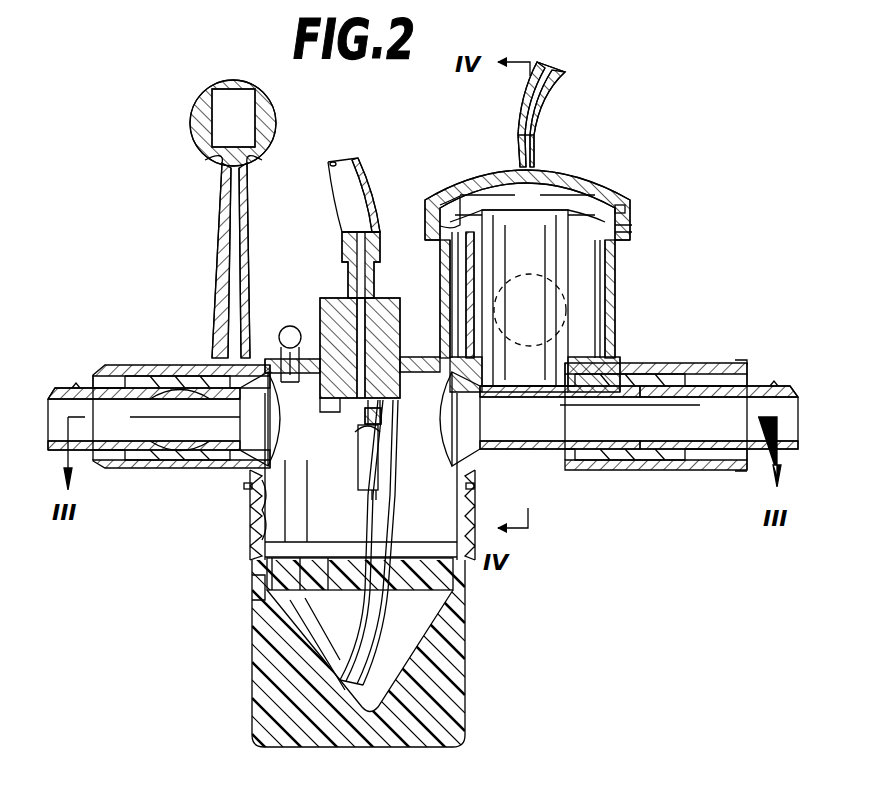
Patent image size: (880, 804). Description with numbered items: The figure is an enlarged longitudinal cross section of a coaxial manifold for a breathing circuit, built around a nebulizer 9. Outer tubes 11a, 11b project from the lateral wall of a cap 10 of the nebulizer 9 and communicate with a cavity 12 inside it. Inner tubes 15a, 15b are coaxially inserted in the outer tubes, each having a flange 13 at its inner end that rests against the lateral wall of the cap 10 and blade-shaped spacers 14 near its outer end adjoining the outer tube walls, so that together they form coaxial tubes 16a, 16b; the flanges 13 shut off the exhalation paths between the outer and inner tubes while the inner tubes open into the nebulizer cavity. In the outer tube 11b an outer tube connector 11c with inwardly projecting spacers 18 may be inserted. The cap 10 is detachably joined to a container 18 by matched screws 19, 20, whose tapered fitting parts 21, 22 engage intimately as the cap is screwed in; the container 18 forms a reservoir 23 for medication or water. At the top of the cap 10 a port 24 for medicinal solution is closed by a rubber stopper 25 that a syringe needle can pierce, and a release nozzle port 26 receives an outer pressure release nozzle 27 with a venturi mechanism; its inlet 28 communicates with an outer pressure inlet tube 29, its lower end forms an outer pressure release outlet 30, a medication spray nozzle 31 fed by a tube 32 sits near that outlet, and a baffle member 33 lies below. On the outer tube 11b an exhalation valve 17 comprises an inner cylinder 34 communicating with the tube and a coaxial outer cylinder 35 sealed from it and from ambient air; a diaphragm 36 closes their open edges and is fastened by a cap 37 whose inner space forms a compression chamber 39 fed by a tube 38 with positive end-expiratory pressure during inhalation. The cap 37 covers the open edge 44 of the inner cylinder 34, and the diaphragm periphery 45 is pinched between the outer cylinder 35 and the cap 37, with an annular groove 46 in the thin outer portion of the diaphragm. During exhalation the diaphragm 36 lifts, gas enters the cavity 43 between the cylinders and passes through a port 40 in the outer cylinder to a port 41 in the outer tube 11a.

The nebulizer 9 is at (474, 571).
The cap 10 is at (420, 357).
The outer tube 11a is at (120, 462).
The outer tube 11b is at (548, 462).
The outer tube connector 11c is at (700, 466).
The cavity 12 is at (260, 580).
The flange 13 is at (240, 462).
The spacer 14 is at (133, 372).
The inner tube 15a is at (180, 384).
The inner tube 15b is at (605, 462).
The coaxial tube 16a is at (158, 486).
The coaxial tube 16b is at (628, 486).
The exhalation valve 17 is at (624, 276).
The container 18 is at (652, 370).
The screw 19 is at (250, 502).
The screw 20 is at (258, 520).
The fitting part 21 is at (462, 518).
The fitting part 22 is at (265, 560).
The reservoir 23 is at (322, 657).
The port 24 is at (297, 386).
The rubber stopper 25 is at (290, 325).
The release nozzle port 26 is at (342, 402).
The outer pressure release nozzle 27 is at (395, 298).
The inlet 28 is at (347, 266).
The outer pressure inlet tube 29 is at (334, 203).
The outer pressure release outlet 30 is at (358, 430).
The medication spray nozzle 31 is at (382, 412).
The tube 32 is at (364, 522).
The baffle member 33 is at (356, 450).
The inner cylinder 34 is at (614, 300).
The outer cylinder 35 is at (620, 314).
The diaphragm 36 is at (593, 192).
The cap 37 is at (560, 178).
The tube 38 is at (555, 96).
The compression chamber 39 is at (487, 188).
The port 40 is at (458, 264).
The port 41 is at (180, 460).
The cavity 43 is at (466, 308).
The open edge 44 is at (528, 225).
The periphery 45 is at (626, 207).
The annular groove 46 is at (442, 196).